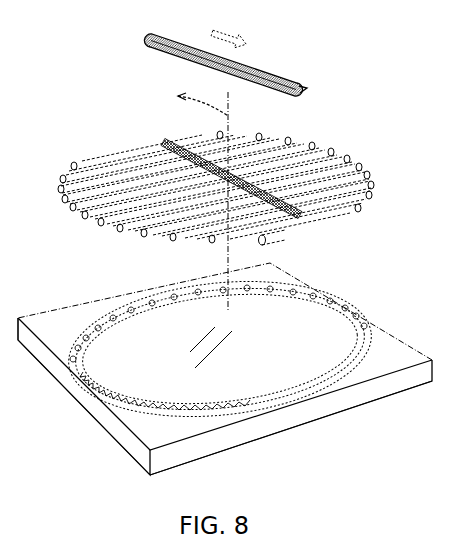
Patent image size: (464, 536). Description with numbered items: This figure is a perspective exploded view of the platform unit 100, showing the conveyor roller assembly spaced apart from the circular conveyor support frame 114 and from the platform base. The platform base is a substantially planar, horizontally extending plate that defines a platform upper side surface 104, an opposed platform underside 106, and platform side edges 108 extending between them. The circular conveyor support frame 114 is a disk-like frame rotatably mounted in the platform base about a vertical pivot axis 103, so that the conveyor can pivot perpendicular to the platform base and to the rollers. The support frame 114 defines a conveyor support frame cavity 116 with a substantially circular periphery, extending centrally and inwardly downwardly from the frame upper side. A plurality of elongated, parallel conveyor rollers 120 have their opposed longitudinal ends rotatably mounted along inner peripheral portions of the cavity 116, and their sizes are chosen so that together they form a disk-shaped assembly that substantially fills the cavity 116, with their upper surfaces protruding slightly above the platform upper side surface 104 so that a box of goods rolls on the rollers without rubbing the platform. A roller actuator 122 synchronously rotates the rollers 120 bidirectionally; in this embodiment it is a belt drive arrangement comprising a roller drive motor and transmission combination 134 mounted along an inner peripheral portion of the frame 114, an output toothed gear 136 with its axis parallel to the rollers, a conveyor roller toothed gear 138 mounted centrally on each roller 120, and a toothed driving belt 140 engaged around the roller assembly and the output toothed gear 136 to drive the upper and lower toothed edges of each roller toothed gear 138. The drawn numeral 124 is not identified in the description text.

The platform unit 100 is at (4, 103).
The pivot axis 103 is at (203, 197).
The platform upper side surface 104 is at (400, 309).
The platform underside 106 is at (207, 458).
The platform side edges 108 is at (357, 428).
The conveyor support frame 114 is at (190, 400).
The conveyor support frame cavity 116 is at (140, 368).
The conveyor rollers 120 is at (343, 160).
The roller actuator 122 is at (287, 230).
The drive 124 is at (9, 223).
The roller drive motor and transmission combination 134 is at (264, 241).
The output toothed gear 136 is at (301, 215).
The conveyor roller toothed gear 138 is at (163, 146).
The driving belt 140 is at (308, 86).